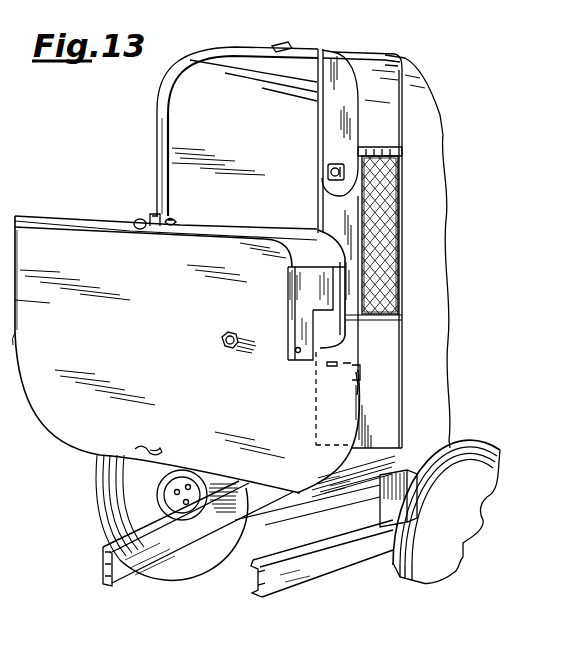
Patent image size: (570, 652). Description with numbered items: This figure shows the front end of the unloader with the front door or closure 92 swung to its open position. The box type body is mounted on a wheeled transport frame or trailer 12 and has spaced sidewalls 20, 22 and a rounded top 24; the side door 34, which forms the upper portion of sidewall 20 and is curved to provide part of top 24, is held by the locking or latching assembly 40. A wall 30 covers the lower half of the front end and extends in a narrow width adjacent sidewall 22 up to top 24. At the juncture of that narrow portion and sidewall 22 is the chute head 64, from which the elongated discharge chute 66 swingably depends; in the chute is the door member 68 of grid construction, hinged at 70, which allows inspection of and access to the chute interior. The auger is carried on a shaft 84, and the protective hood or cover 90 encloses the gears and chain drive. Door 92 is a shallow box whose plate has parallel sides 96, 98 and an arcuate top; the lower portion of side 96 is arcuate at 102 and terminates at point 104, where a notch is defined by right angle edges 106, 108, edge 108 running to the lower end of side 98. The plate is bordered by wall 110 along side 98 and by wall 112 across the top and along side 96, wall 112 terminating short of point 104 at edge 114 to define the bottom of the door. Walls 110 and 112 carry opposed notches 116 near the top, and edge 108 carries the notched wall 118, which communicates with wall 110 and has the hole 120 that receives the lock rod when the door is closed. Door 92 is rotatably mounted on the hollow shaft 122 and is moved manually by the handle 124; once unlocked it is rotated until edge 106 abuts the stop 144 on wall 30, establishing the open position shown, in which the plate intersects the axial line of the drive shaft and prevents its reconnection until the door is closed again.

The wheeled transport frame or trailer 12 is at (373, 572).
The sidewall 20 is at (157, 128).
The sidewall 22 is at (449, 307).
The rounded top 24 is at (392, 56).
The wall 30 is at (212, 216).
The side door 34 is at (157, 91).
The locking or latching assembly 40 is at (151, 209).
The chute head 64 is at (400, 118).
The discharge chute 66 is at (400, 406).
The door member 68 is at (392, 272).
The hinge 70 is at (403, 158).
The shaft 84 is at (339, 168).
The protective hood or cover 90 is at (14, 337).
The door or closure 92 is at (80, 451).
The side 96 is at (96, 460).
The side 98 is at (153, 231).
The arcuate lower portion 102 is at (304, 497).
The point 104 is at (361, 364).
The edge 106 is at (358, 378).
The edge 108 is at (289, 308).
The wall 110 is at (228, 237).
The wall 112 is at (326, 481).
The edge 114 is at (380, 458).
The notch 116 is at (292, 327).
The notched wall 118 is at (288, 288).
The hole 120 is at (290, 352).
The hollow shaft 122 is at (222, 344).
The handle 124 is at (160, 450).
The stop 144 is at (330, 366).